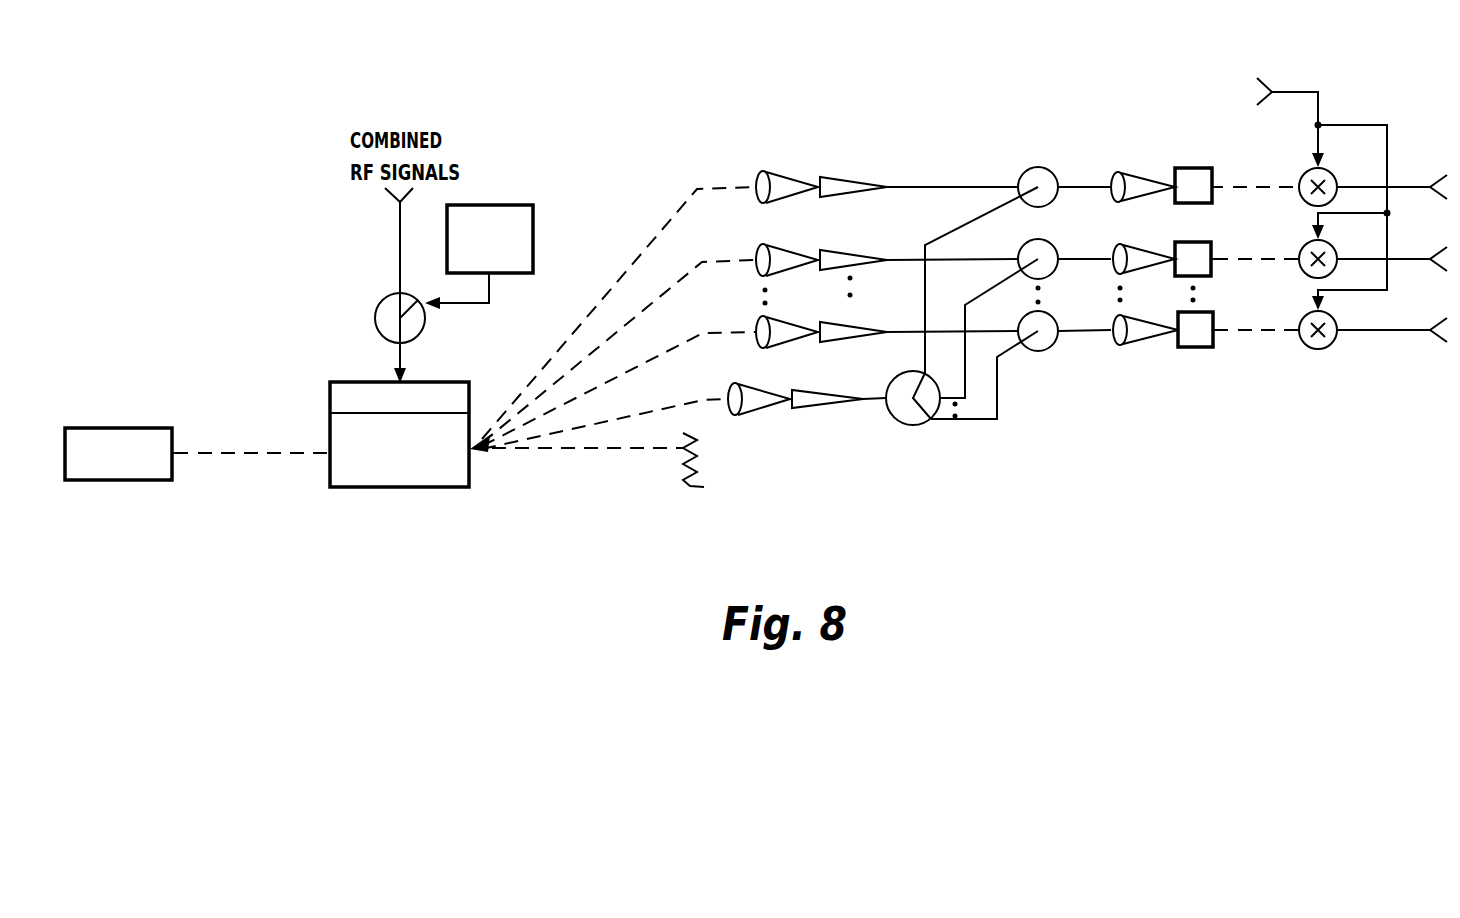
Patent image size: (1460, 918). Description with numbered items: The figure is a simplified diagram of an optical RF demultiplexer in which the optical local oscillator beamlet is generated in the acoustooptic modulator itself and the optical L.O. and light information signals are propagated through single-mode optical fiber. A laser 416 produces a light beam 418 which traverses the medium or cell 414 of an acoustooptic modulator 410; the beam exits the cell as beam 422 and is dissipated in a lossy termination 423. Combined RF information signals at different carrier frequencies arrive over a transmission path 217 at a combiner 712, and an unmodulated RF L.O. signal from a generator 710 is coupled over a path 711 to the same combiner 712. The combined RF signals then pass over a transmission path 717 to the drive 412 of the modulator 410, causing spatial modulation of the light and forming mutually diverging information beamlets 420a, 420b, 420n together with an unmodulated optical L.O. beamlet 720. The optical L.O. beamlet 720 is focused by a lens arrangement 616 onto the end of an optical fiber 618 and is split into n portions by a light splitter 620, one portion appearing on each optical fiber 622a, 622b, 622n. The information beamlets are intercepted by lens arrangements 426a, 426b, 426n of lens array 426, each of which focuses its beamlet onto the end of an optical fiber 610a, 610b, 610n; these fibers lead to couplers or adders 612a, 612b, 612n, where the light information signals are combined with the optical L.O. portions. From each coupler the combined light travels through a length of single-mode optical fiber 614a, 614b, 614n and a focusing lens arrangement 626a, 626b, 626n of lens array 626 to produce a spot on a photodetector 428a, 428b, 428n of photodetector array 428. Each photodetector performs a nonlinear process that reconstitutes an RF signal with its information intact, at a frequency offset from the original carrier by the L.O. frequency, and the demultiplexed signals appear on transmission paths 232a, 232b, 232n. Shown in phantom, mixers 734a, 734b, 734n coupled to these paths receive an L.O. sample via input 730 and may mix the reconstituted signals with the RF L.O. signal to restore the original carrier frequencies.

The combined RF signal transmission line 217 is at (400, 257).
The RF local oscillator generator 710 is at (534, 256).
The transmission path 711 is at (478, 304).
The combiner 712 is at (376, 318).
The transmission path 717 is at (399, 361).
The acoustooptic modulator 410 is at (370, 475).
The driver 412 is at (329, 403).
The acoustooptic cell 414 is at (329, 478).
The laser 416 is at (117, 428).
The light beam 418 is at (238, 453).
The information beamlet 420a is at (682, 214).
The information beamlet 420b is at (613, 335).
The information beamlet 420n is at (578, 392).
The exit beam 422 is at (603, 452).
The lossy termination 423 is at (715, 469).
The lens array 426 is at (765, 135).
The lens arrangement 426a is at (753, 183).
The lens arrangement 426b is at (753, 255).
The lens arrangement 426n is at (754, 327).
The optical L.O. beamlet 720 is at (674, 407).
The lens arrangement 616 is at (734, 415).
The optical fiber 618 is at (821, 408).
The optical fiber 610a is at (852, 177).
The optical fiber 610b is at (852, 250).
The optical fiber 610n is at (856, 342).
The coupler 612a is at (1022, 173).
The coupler 612b is at (1055, 274).
The coupler 612n is at (1027, 350).
The single-mode optical fiber 614a is at (1082, 185).
The single-mode optical fiber 614b is at (1082, 259).
The single-mode optical fiber 614n is at (1087, 333).
The light splitter 620 is at (910, 425).
The optical fiber 622a is at (967, 218).
The optical fiber 622b is at (996, 282).
The optical fiber 622n is at (988, 420).
The focusing lens array 626 is at (1120, 142).
The focusing lens arrangement 626a is at (1122, 172).
The focusing lens arrangement 626b is at (1122, 244).
The focusing lens arrangement 626n is at (1125, 347).
The photodetector array 428 is at (1195, 142).
The photodetector 428a is at (1205, 167).
The photodetector 428b is at (1178, 278).
The photodetector 428n is at (1195, 349).
The transmission path 232a is at (1227, 188).
The transmission path 232b is at (1232, 243).
The transmission path 232n is at (1250, 333).
The local oscillator input 730 is at (1297, 92).
The mixer 734a is at (1301, 198).
The mixer 734b is at (1303, 275).
The mixer 734n is at (1313, 349).